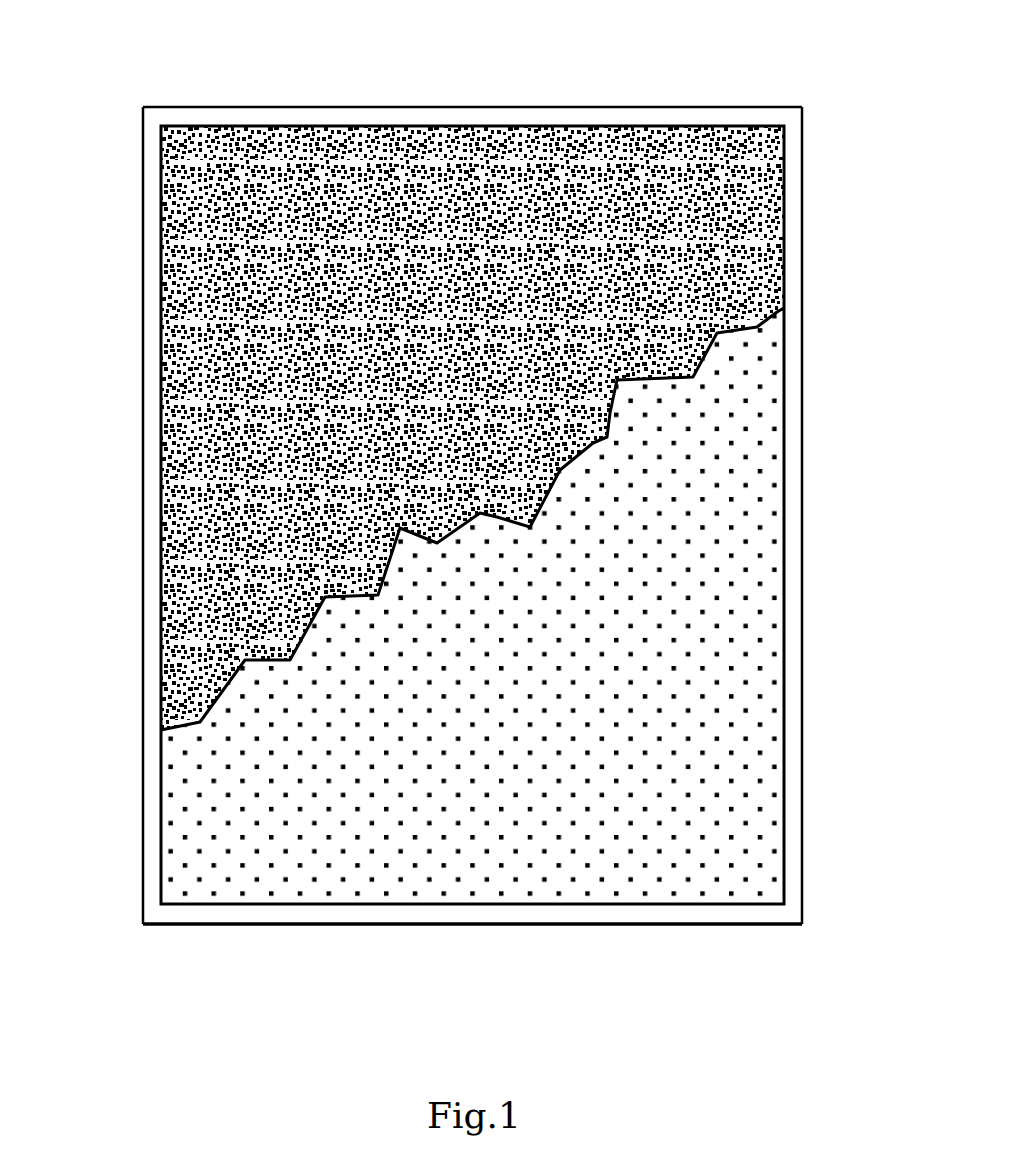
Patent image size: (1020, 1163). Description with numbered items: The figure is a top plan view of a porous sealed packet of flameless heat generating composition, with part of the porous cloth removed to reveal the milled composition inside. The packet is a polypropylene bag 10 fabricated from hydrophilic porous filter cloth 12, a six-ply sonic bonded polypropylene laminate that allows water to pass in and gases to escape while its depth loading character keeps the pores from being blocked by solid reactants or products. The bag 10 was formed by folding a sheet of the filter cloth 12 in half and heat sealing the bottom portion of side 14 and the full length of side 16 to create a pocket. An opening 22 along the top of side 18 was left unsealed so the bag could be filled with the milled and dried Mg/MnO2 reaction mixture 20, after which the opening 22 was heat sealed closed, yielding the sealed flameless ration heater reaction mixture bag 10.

The polypropylene bag 10 is at (825, 481).
The porous filter cloth 12 is at (715, 627).
The side 14 is at (302, 926).
The side 16 is at (142, 550).
The side 18 is at (310, 124).
The milled Mg/MnO2 reaction mixture 20 is at (530, 428).
The opening 22 is at (188, 107).